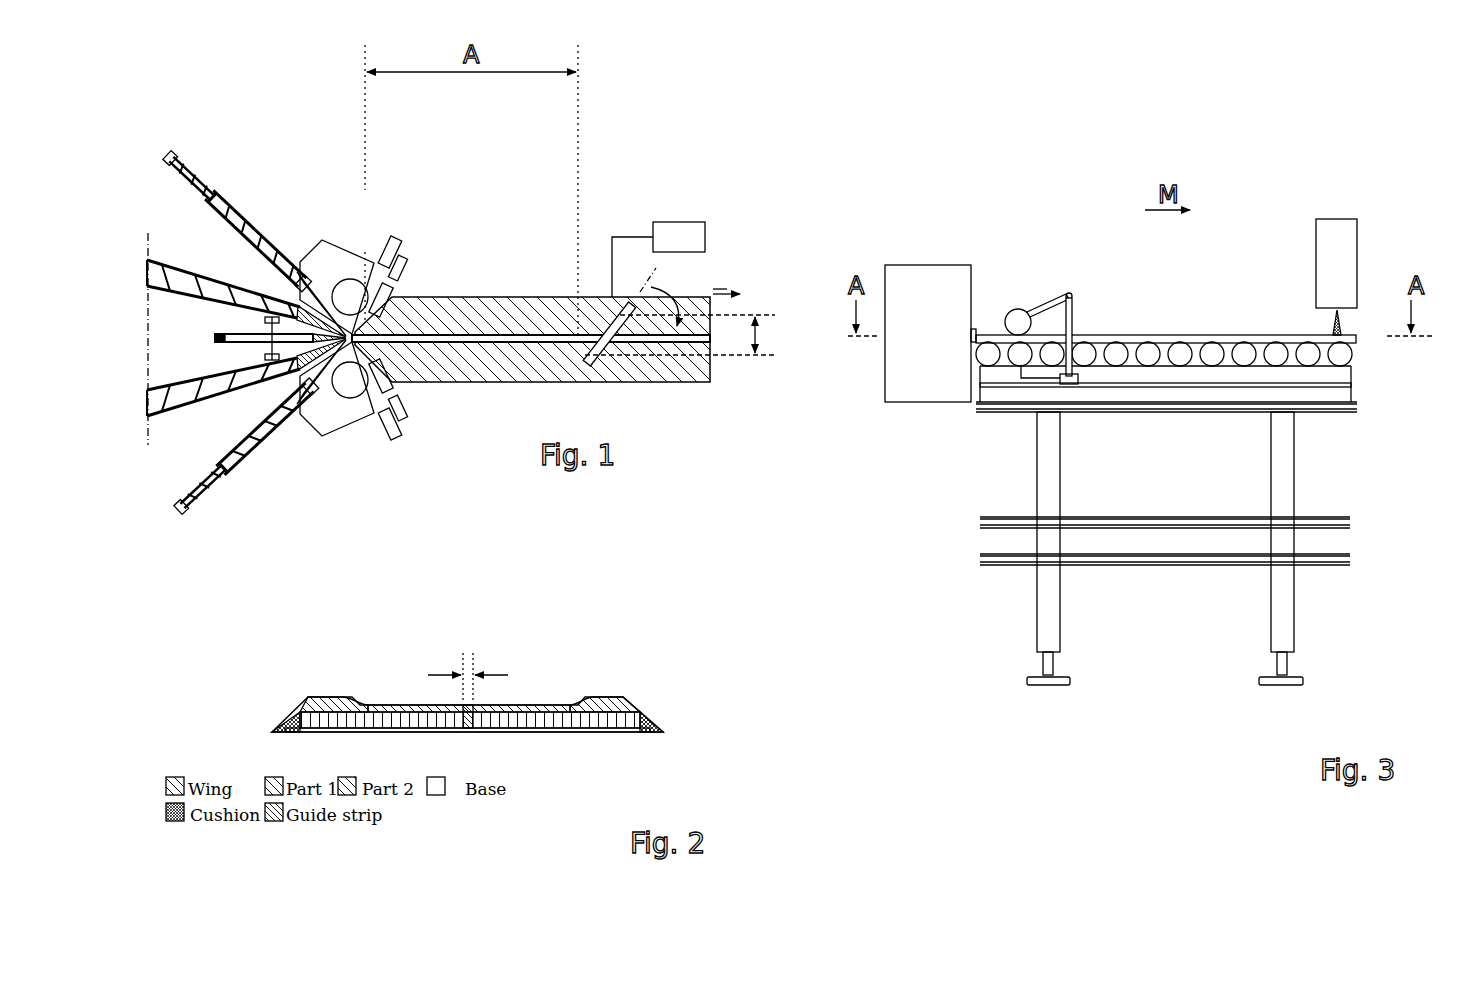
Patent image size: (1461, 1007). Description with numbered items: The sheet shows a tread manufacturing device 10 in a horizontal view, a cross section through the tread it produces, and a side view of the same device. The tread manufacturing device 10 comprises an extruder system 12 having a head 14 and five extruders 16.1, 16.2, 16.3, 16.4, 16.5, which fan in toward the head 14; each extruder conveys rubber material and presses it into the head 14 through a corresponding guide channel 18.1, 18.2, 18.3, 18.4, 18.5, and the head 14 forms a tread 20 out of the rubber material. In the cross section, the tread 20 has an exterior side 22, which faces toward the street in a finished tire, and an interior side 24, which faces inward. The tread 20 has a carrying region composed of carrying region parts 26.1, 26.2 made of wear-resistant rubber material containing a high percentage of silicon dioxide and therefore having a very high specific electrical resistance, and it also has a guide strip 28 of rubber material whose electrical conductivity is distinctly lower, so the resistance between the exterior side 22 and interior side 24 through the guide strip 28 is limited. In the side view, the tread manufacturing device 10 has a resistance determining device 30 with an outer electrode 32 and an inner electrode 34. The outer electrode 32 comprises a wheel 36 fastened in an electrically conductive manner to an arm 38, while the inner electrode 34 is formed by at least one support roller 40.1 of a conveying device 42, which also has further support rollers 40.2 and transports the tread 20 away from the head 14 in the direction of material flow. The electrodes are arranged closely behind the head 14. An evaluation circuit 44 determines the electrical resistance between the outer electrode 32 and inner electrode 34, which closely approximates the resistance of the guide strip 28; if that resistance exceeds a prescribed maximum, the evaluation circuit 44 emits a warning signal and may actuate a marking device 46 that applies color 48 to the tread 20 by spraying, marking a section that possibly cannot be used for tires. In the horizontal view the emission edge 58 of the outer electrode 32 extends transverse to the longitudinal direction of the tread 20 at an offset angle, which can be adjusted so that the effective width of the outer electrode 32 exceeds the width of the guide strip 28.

In FIG. 1, the tread manufacturing device 10 is at (575, 261).
In FIG. 3, the tread manufacturing device 10 is at (1173, 387).
In FIG. 1, the extruder system 12 is at (369, 269).
In FIG. 3, the extruder system 12 is at (937, 264).
In FIG. 1, the head 14 is at (368, 255).
In FIG. 3, the head 14 is at (886, 265).
In FIG. 1, the extruder 16.1 is at (233, 182).
In FIG. 1, the extruder 16.2 is at (172, 258).
In FIG. 1, the extruder 16.3 is at (240, 334).
In FIG. 1, the extruder 16.4 is at (188, 412).
In FIG. 1, the extruder 16.5 is at (275, 423).
In FIG. 1, the guide channel 18.1 is at (318, 285).
In FIG. 1, the guide channel 18.2 is at (263, 300).
In FIG. 1, the guide channel 18.3 is at (257, 364).
In FIG. 1, the guide channel 18.4 is at (298, 376).
In FIG. 1, the guide channel 18.5 is at (300, 408).
In FIG. 1, the tread 20 is at (532, 305).
In FIG. 2, the tread 20 is at (498, 718).
In FIG. 3, the tread 20 is at (1190, 335).
In FIG. 2, the exterior side 22 is at (468, 718).
In FIG. 2, the interior side 24 is at (521, 745).
In FIG. 2, the carrying region part 26.1 is at (323, 708).
In FIG. 2, the carrying region part 26.2 is at (608, 702).
In FIG. 1, the guide strip 28 is at (455, 336).
In FIG. 2, the guide strip 28 is at (466, 734).
In FIG. 3, the resistance determining device 30 is at (1052, 318).
In FIG. 1, the outer electrode 32 is at (642, 340).
In FIG. 3, the inner electrode 34 is at (1015, 382).
In FIG. 3, the wheel 36 is at (1009, 311).
In FIG. 3, the arm 38 is at (1063, 295).
In FIG. 3, the support roller 40.1 is at (1120, 362).
In FIG. 3, the support roller 40.2 is at (1152, 362).
In FIG. 3, the conveying device 42 is at (1218, 472).
In FIG. 1, the evaluation circuit 44 is at (658, 259).
In FIG. 3, the evaluation circuit 44 is at (1078, 362).
In FIG. 3, the marking device 46 is at (1387, 277).
In FIG. 3, the color 48 is at (1345, 318).
In FIG. 1, the emission edge 58 is at (618, 306).